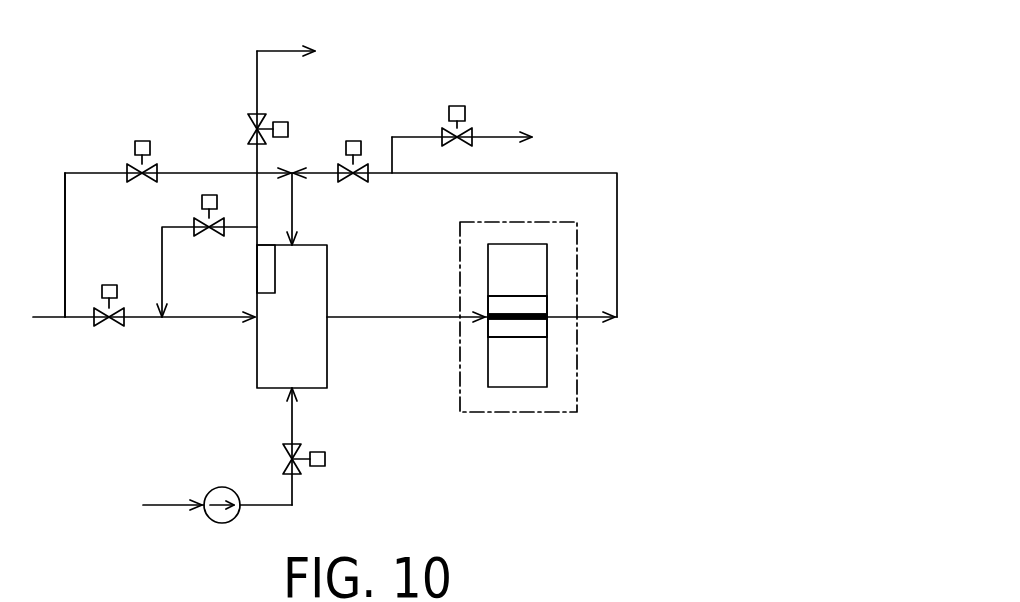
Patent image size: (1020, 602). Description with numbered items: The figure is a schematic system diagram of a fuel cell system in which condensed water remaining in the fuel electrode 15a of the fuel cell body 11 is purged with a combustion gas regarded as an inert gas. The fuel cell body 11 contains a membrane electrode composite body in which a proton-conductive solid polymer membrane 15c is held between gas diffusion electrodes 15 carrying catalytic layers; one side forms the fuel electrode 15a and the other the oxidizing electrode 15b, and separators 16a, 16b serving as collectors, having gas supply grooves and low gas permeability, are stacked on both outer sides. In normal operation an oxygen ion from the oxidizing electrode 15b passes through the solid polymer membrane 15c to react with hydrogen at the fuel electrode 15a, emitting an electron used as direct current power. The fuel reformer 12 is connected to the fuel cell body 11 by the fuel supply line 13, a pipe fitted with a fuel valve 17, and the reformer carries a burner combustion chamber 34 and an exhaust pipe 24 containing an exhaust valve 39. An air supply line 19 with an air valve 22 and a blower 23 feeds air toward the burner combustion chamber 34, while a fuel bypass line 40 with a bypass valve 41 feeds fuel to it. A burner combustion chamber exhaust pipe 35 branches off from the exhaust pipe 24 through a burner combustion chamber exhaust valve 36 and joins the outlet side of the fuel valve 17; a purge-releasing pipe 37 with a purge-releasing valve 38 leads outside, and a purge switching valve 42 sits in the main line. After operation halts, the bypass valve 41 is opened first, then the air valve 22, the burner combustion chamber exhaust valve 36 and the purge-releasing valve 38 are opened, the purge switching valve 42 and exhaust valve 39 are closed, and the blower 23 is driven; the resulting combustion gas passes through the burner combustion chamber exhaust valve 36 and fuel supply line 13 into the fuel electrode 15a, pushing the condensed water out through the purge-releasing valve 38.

The fuel cell body 11 is at (473, 412).
The fuel reformer 12 is at (328, 365).
The fuel supply line 13 is at (377, 316).
The gas diffusion electrode 15 is at (670, 333).
The fuel electrode 15a is at (533, 328).
The oxidizing electrode 15b is at (540, 302).
The solid polymer membrane 15c is at (547, 318).
The separator 16a is at (535, 387).
The separator 16b is at (532, 244).
The fuel valve 17 is at (108, 285).
The air supply line 19 is at (168, 504).
The air valve 22 is at (318, 451).
The blower 23 is at (222, 487).
The exhaust pipe 24 is at (269, 50).
The burner combustion chamber 34 is at (275, 268).
The burner combustion chamber exhaust pipe 35 is at (172, 228).
The burner combustion chamber exhaust valve 36 is at (213, 236).
The purge-releasing pipe 37 is at (500, 137).
The purge-releasing valve 38 is at (457, 106).
The exhaust valve 39 is at (282, 121).
The fuel bypass line 40 is at (80, 172).
The bypass valve 41 is at (142, 141).
The purge switching valve 42 is at (353, 141).